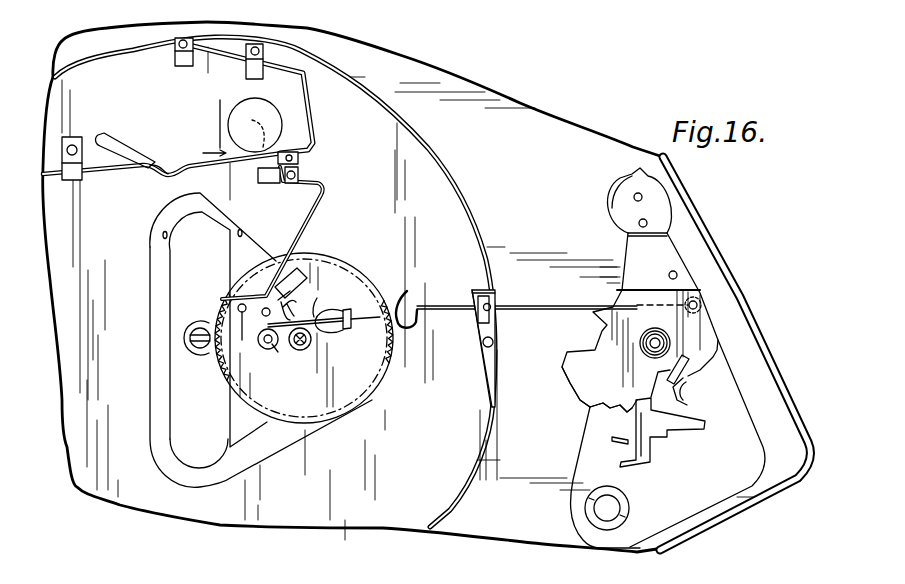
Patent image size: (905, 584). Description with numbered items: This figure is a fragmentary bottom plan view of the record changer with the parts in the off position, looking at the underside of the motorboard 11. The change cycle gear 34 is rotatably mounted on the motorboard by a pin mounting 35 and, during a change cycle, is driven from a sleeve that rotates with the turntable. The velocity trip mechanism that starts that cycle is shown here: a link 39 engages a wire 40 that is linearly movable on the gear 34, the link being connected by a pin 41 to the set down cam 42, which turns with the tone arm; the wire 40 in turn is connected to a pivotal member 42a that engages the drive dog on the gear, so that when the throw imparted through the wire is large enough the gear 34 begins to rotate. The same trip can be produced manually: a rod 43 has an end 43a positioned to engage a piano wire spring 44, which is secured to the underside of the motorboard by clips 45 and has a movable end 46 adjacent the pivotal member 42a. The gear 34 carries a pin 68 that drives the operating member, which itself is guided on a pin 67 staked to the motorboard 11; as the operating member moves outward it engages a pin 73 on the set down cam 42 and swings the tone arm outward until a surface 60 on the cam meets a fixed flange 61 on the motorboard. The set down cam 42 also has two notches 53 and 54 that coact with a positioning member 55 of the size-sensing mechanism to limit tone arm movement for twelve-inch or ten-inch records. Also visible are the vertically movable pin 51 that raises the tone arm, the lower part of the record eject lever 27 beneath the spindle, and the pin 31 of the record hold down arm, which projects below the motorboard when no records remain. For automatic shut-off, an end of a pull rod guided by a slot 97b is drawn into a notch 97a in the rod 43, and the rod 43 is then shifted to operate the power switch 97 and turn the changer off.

The motorboard 11 is at (572, 128).
The record eject lever 27 is at (201, 352).
The pin 31 is at (613, 507).
The change cycle gear 34 is at (362, 372).
The pin mounting 35 is at (297, 349).
The link 39 is at (543, 302).
The wire 40 is at (314, 314).
The pin 41 is at (698, 304).
The set down cam 42 is at (670, 253).
The pivotal member 42a is at (244, 318).
The rod 43 is at (100, 172).
The end 43a is at (265, 172).
The piano wire spring 44 is at (309, 118).
The clips 45 is at (257, 43).
The movable end 46 is at (313, 217).
The vertically movable pin 51 is at (650, 347).
The notch 53 is at (630, 398).
The notch 54 is at (618, 416).
The positioning member 55 is at (650, 434).
The surface 60 is at (689, 378).
The fixed flange 61 is at (677, 388).
The pin 67 is at (496, 343).
The pin 68 is at (272, 352).
The pin 73 is at (668, 275).
The power switch 97 is at (245, 108).
The notch 97a is at (167, 174).
The slot 97b is at (112, 143).